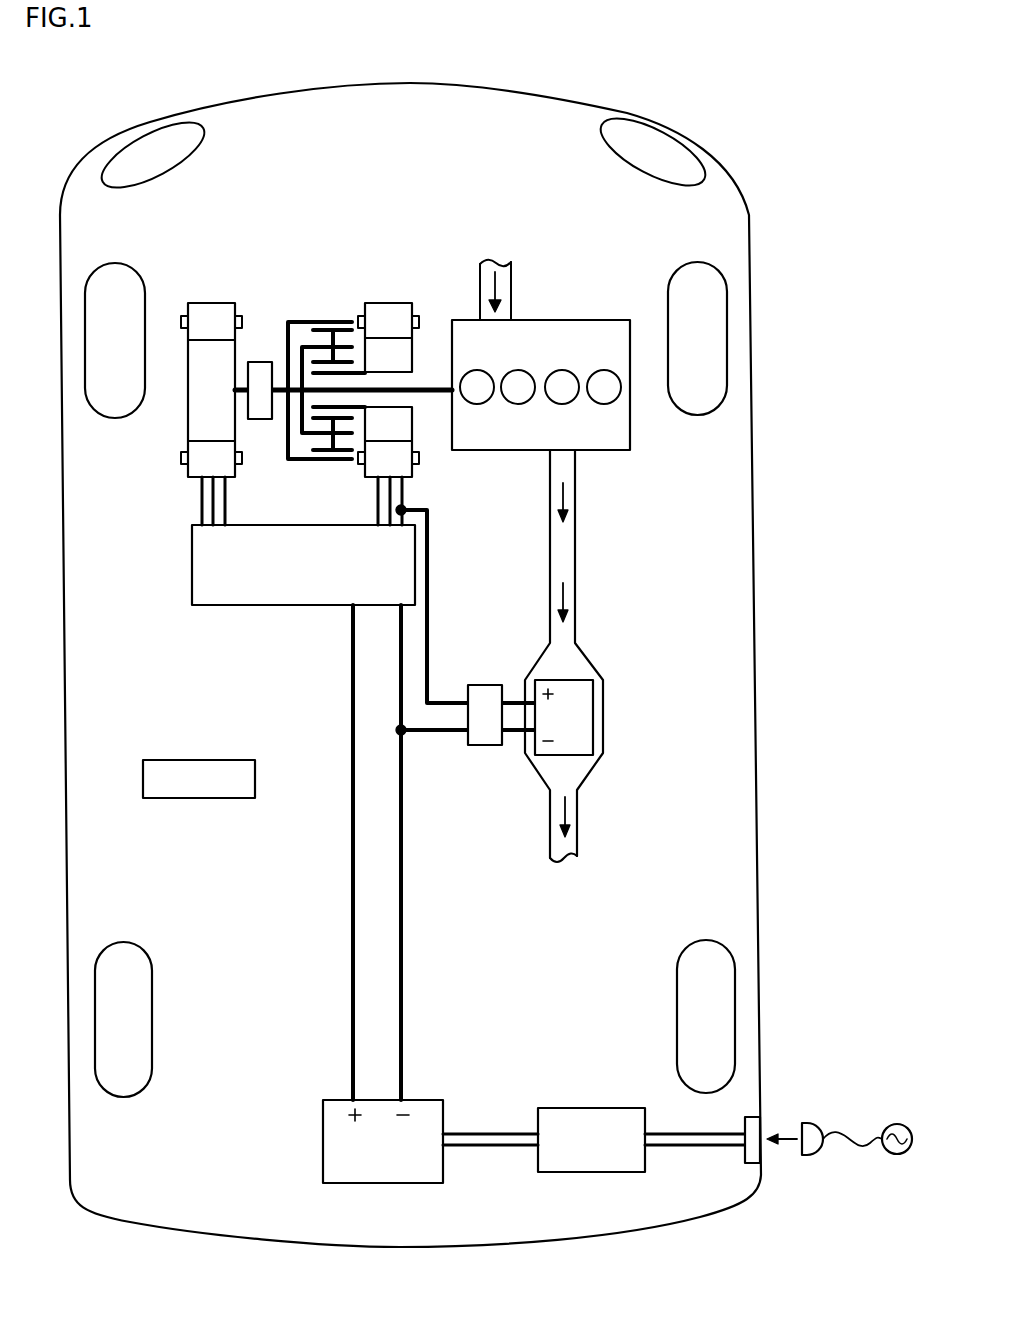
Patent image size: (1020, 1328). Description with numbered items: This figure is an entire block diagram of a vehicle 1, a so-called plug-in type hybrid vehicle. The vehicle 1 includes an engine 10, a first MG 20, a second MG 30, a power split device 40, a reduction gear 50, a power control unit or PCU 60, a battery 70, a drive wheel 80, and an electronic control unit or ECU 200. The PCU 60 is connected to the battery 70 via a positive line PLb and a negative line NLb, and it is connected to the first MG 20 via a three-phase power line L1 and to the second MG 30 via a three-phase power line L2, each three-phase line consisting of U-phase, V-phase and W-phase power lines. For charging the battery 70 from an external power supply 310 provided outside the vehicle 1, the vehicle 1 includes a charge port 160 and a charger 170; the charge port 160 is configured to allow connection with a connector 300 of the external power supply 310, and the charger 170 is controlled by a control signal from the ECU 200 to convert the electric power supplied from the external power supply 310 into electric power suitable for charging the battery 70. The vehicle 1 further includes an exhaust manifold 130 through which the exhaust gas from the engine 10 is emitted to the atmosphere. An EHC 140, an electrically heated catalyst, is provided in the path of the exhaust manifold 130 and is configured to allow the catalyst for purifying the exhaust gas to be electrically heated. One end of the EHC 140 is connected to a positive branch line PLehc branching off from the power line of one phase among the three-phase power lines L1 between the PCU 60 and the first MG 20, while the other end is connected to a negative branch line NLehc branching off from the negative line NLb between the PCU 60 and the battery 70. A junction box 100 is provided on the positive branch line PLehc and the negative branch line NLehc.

The vehicle 1 is at (388, 54).
The engine 10 is at (568, 320).
The first MG 20 is at (384, 303).
The second MG 30 is at (212, 303).
The power split device 40 is at (320, 322).
The reduction gear 50 is at (259, 362).
The power control unit 60 is at (259, 606).
The battery 70 is at (427, 1100).
The drive wheel 80 is at (113, 262).
The junction box 100 is at (486, 685).
The exhaust manifold 130 is at (576, 606).
The EHC 140 is at (594, 718).
The charge port 160 is at (757, 1117).
The charger 170 is at (591, 1108).
The electronic control unit 200 is at (200, 799).
The connector 300 is at (812, 1156).
The external power supply 310 is at (897, 1155).
The 3-phase power line L1 is at (403, 493).
The 3-phase power line L2 is at (226, 495).
The positive branch line PLehc is at (428, 577).
The negative branch line NLehc is at (430, 736).
The positive line PLb is at (350, 912).
The negative line NLb is at (405, 912).